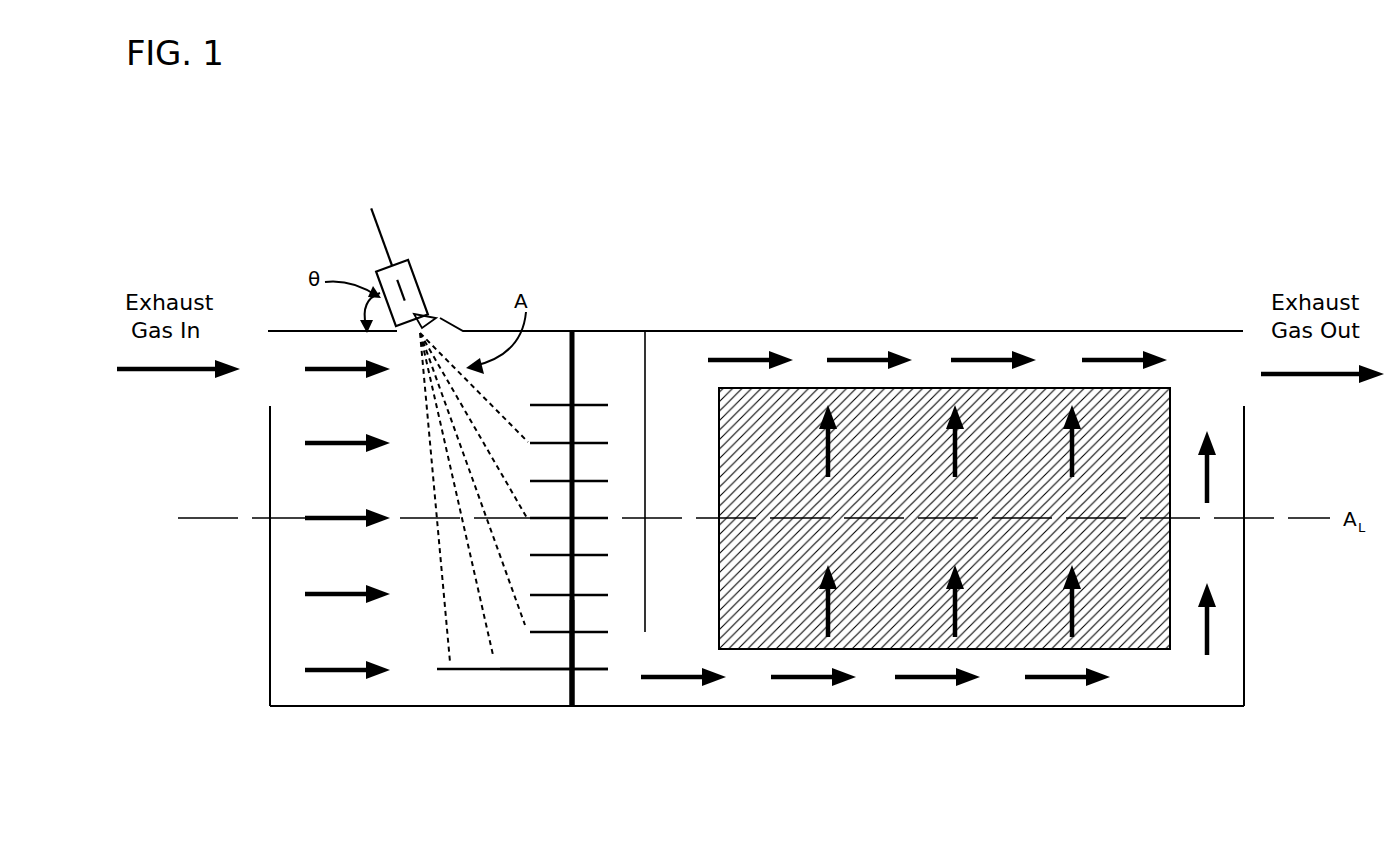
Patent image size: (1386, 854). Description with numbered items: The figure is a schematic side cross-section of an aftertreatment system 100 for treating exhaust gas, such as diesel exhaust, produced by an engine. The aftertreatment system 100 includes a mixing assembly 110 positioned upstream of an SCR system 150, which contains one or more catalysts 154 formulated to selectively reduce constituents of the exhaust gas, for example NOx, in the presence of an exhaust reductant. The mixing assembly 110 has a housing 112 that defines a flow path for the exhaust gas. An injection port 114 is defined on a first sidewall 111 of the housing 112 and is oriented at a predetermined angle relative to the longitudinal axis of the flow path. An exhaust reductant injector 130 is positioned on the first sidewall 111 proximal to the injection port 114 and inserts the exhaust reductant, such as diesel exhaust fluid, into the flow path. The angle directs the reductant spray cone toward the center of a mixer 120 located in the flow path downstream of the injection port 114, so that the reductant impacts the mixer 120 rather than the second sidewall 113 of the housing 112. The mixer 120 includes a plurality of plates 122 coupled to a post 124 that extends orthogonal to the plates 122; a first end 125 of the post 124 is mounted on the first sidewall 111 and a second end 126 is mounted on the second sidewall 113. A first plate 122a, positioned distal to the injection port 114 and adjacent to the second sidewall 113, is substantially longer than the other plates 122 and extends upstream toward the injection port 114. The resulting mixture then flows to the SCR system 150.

The aftertreatment system 100 is at (946, 192).
The mixing assembly 110 is at (318, 714).
The first sidewall 111 is at (538, 331).
The housing 112 is at (270, 631).
The second sidewall 113 is at (483, 708).
The injection port 114 is at (440, 318).
The mixer 120 is at (466, 686).
The plates 122 is at (610, 684).
The first plate 122a is at (523, 672).
The post 124 is at (574, 660).
The first end 125 is at (576, 331).
The second end 126 is at (568, 660).
The exhaust reductant injector 130 is at (414, 290).
The SCR system 150 is at (762, 331).
The catalyst 154 is at (930, 400).